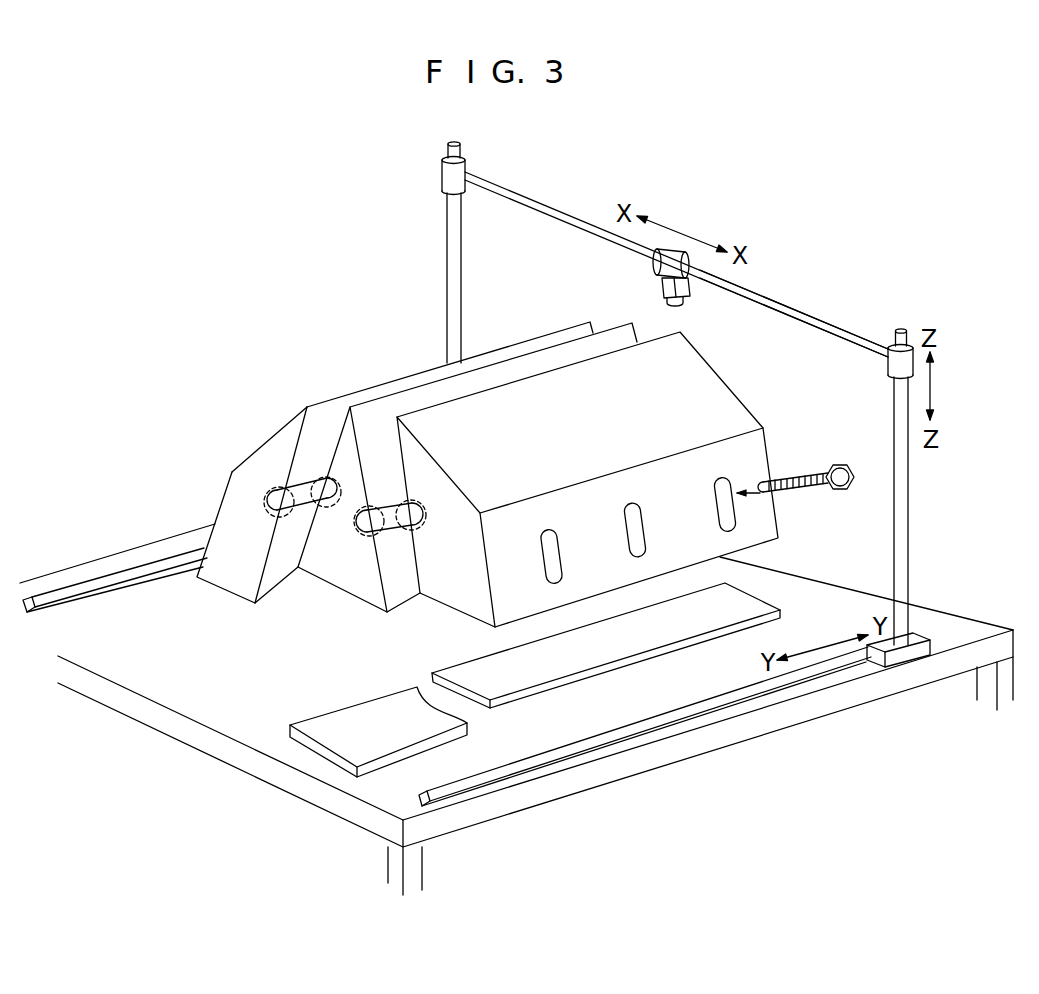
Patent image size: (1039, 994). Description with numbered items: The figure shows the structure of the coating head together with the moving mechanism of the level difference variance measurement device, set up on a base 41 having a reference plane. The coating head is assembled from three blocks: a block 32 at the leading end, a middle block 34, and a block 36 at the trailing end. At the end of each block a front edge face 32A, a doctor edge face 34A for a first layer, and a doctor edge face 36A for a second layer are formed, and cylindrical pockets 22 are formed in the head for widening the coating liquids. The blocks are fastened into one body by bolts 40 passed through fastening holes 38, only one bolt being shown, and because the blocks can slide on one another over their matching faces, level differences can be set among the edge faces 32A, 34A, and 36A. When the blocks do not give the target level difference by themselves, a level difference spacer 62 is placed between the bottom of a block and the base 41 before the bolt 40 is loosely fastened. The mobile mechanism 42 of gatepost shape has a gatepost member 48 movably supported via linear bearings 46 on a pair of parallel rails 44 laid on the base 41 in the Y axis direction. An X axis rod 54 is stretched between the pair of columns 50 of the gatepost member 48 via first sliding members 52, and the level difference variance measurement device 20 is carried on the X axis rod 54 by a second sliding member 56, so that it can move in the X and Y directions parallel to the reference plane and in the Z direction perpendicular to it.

The level difference variance measurement device 20 is at (686, 290).
The pockets 22 is at (290, 508).
The block at the leading end 32 is at (233, 567).
The front edge face 32A is at (263, 447).
The middle block 34 is at (360, 578).
The doctor edge face for a first layer 34A is at (613, 327).
The block at the trailing end 36 is at (750, 452).
The doctor edge face for a second layer 36A is at (702, 390).
The fastening holes 38 is at (560, 556).
The bolts 40 is at (823, 490).
The base 41 is at (960, 617).
The mobile mechanism 42 is at (790, 300).
The rails 44 is at (170, 560).
The linear bearings 46 is at (910, 667).
The gatepost member 48 is at (852, 330).
The columns 50 is at (461, 297).
The first sliding members 52 is at (447, 183).
The X axis rod 54 is at (575, 226).
The second sliding member 56 is at (680, 252).
The level difference spacer 62 is at (407, 722).